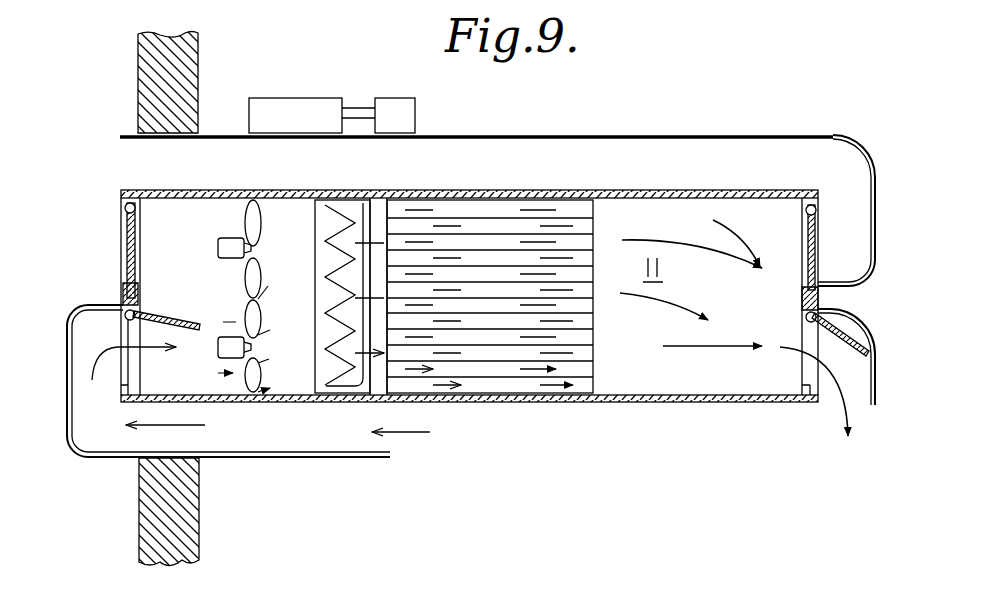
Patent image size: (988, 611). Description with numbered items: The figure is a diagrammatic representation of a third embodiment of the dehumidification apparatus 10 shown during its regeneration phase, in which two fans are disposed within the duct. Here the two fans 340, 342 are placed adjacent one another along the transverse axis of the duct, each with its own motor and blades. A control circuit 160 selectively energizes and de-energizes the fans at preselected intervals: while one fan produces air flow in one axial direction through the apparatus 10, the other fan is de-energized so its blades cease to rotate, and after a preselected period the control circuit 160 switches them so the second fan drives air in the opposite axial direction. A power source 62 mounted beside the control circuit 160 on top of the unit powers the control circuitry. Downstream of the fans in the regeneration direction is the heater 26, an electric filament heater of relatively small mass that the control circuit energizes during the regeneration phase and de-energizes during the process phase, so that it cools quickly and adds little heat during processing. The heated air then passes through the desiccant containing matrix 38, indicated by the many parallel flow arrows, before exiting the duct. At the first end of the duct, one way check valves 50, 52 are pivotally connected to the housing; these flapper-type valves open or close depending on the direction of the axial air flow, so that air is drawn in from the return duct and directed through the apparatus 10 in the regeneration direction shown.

The dehumidification apparatus 10 is at (612, 110).
The control circuit 160 is at (275, 106).
The power source 62 is at (400, 104).
The fan 340 is at (250, 222).
The fan 342 is at (258, 373).
The one way check valve 50 is at (126, 252).
The one way check valve 52 is at (163, 317).
The heater 26 is at (332, 364).
The desiccant containing matrix 38 is at (492, 230).